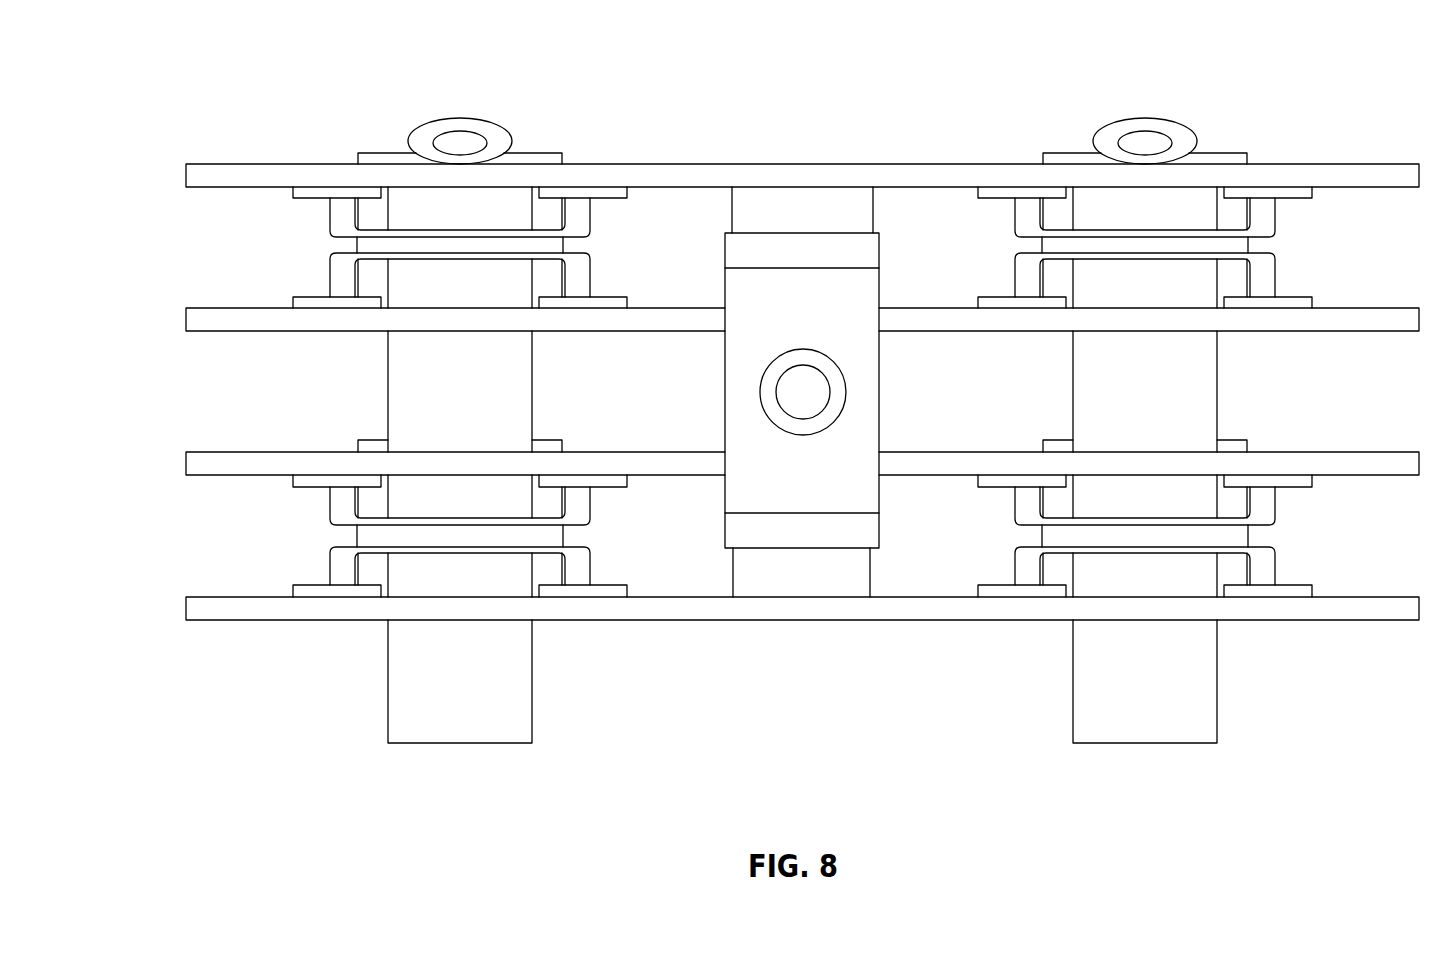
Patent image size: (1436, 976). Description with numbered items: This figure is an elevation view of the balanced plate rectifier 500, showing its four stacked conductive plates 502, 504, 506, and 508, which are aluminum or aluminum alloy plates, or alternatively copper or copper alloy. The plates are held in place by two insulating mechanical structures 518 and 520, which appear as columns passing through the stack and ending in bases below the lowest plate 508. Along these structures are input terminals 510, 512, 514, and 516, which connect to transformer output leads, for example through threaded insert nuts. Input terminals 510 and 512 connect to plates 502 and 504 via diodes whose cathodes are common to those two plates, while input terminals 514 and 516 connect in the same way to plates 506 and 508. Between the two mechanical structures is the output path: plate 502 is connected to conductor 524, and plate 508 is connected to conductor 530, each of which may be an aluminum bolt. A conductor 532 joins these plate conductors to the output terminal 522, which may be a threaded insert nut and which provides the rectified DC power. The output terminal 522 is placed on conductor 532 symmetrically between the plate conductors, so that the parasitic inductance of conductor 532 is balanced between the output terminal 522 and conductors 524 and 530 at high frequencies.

The balanced plate rectifier 500 is at (200, 51).
The first plate 502 is at (203, 174).
The second plate 504 is at (203, 318).
The plate 506 is at (203, 462).
The plate 508 is at (203, 606).
The input terminal 510 is at (1055, 152).
The input terminal 512 is at (383, 152).
The input terminal 514 is at (1055, 447).
The input terminal 516 is at (373, 447).
The mechanical structure 518 is at (513, 697).
The mechanical structure 520 is at (1190, 688).
The output terminal 522 is at (770, 395).
The conductor 524 is at (787, 207).
The conductor 530 is at (830, 583).
The conductor 532 is at (740, 300).